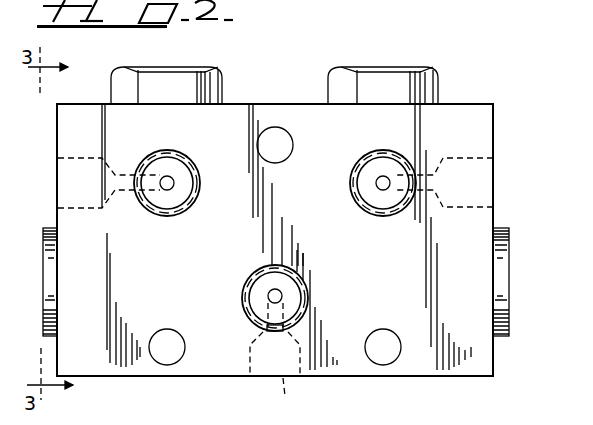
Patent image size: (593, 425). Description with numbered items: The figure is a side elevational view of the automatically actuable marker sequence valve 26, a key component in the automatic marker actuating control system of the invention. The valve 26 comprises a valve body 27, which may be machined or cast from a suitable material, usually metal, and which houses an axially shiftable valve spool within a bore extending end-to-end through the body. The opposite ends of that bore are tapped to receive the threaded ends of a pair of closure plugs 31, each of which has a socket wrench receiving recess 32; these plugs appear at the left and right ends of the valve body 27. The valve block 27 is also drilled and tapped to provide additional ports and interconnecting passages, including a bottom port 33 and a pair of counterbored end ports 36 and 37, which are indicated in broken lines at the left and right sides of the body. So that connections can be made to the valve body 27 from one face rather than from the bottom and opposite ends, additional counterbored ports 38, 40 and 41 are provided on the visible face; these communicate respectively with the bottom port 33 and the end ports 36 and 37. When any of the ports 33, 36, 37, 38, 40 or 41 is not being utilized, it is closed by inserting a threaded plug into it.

The marker sequence valve 26 is at (592, 92).
The valve body 27 is at (592, 121).
The closure plug 31 is at (43, 297).
The socket wrench receiving recess 32 is at (509, 320).
The bottom port 33 is at (280, 375).
The counterbored end port 36 is at (60, 169).
The counterbored end port 37 is at (493, 165).
The counterbored port 38 is at (306, 290).
The counterbored port 40 is at (195, 166).
The counterbored port 41 is at (354, 170).